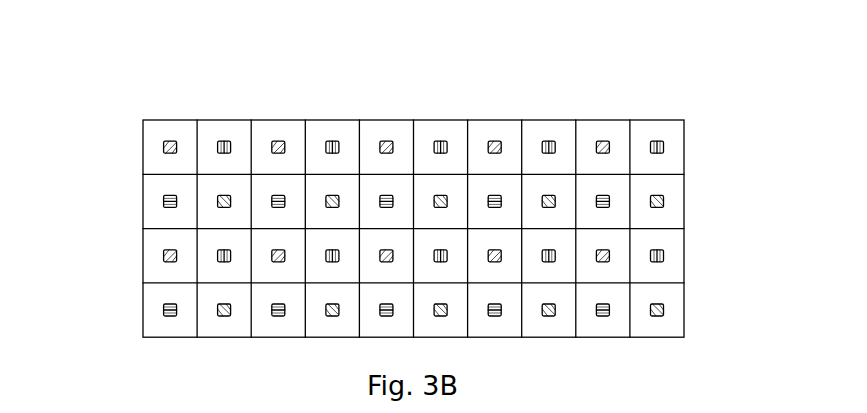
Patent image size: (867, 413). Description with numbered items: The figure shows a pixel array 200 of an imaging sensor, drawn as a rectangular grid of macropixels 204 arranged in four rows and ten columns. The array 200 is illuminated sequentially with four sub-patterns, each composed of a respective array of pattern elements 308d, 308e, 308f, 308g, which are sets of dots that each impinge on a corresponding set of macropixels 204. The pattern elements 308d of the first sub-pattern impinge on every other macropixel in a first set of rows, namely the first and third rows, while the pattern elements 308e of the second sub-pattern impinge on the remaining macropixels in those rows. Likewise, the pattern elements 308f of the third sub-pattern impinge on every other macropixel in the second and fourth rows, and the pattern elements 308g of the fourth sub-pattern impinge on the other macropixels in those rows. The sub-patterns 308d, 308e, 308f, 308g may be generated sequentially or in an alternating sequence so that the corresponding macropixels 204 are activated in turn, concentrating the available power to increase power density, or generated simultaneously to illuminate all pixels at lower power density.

The array of pixels 200 is at (128, 83).
The macropixels 204 is at (658, 120).
The pattern elements of the first sub-pattern 308d is at (164, 147).
The pattern elements of the second sub-pattern 308e is at (664, 147).
The pattern elements of the third sub-pattern 308f is at (164, 201).
The pattern elements of the fourth sub-pattern 308g is at (664, 201).